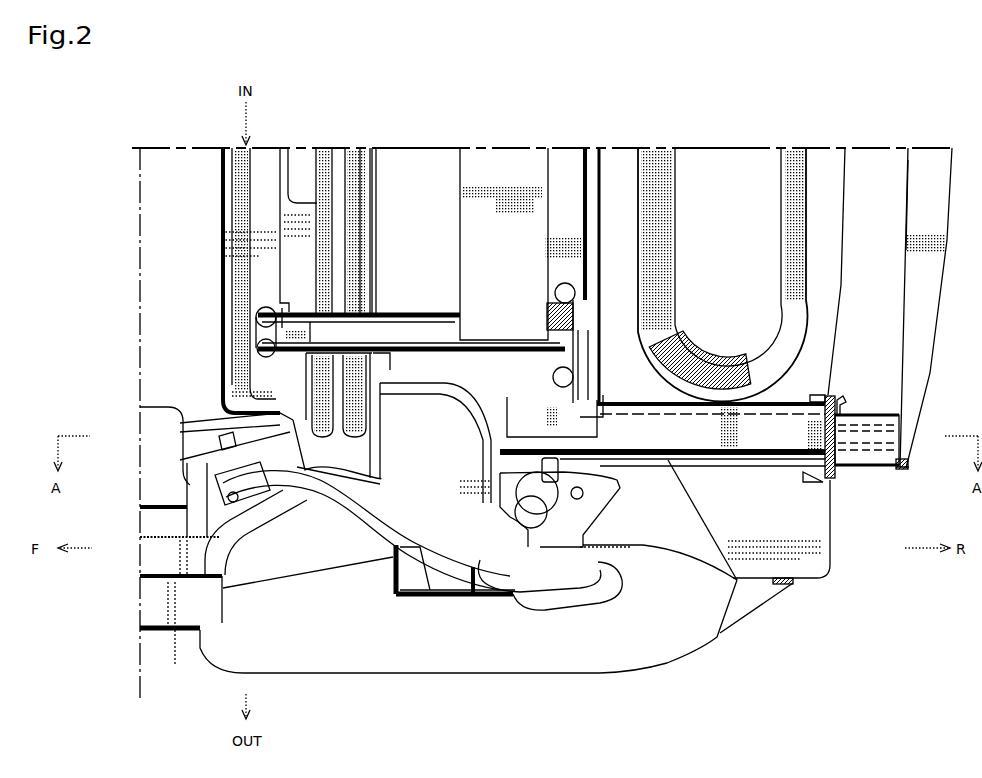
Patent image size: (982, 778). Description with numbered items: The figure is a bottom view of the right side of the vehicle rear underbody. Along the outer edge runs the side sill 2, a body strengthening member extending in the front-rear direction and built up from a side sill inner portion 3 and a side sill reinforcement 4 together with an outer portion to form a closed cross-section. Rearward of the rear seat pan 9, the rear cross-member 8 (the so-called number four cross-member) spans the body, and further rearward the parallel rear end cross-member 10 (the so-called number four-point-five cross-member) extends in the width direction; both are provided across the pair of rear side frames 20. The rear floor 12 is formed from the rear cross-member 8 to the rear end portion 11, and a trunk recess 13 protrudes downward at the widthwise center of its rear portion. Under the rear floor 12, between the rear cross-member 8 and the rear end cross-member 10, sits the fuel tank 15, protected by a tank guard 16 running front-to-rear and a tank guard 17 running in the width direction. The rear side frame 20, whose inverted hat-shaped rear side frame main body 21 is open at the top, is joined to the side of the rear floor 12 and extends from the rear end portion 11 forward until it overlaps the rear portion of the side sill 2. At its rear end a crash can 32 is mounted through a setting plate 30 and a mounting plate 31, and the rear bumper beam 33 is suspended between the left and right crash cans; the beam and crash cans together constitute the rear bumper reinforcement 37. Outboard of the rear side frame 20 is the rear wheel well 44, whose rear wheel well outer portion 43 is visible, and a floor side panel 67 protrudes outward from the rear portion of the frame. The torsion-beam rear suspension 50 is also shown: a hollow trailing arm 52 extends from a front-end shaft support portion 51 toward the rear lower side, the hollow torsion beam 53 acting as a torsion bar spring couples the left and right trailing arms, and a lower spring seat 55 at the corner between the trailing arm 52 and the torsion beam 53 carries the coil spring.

The side sill 2 is at (152, 643).
The side sill inner portion 3 is at (240, 543).
The side sill reinforcement 4 is at (173, 637).
The rear cross-member 8 is at (290, 150).
The rear seat pan 9 is at (188, 226).
The rear end cross-member 10 is at (572, 152).
The rear end portion 11 is at (842, 286).
The rear floor 12 is at (621, 152).
The trunk recess 13 is at (740, 224).
The fuel tank 15 is at (425, 187).
The tank guard 16 is at (392, 316).
The tank guard 17 is at (506, 239).
The rear side frame 20 is at (656, 460).
The rear side frame main body 21 is at (627, 408).
The setting plate 30 is at (826, 435).
The mounting plate 31 is at (843, 405).
The crash can 32 is at (866, 466).
The rear bumper beam 33 is at (906, 195).
The rear bumper reinforcement 37 is at (932, 374).
The rear wheel well outer portion 43 is at (630, 674).
The rear wheel well 44 is at (708, 515).
The torsion-beam rear suspension 50 is at (366, 248).
The front-end shaft support portion 51 is at (220, 483).
The trailing arm 52 is at (372, 560).
The torsion beam 53 is at (316, 253).
The lower spring seat 55 is at (383, 447).
The floor side panel 67 is at (793, 512).